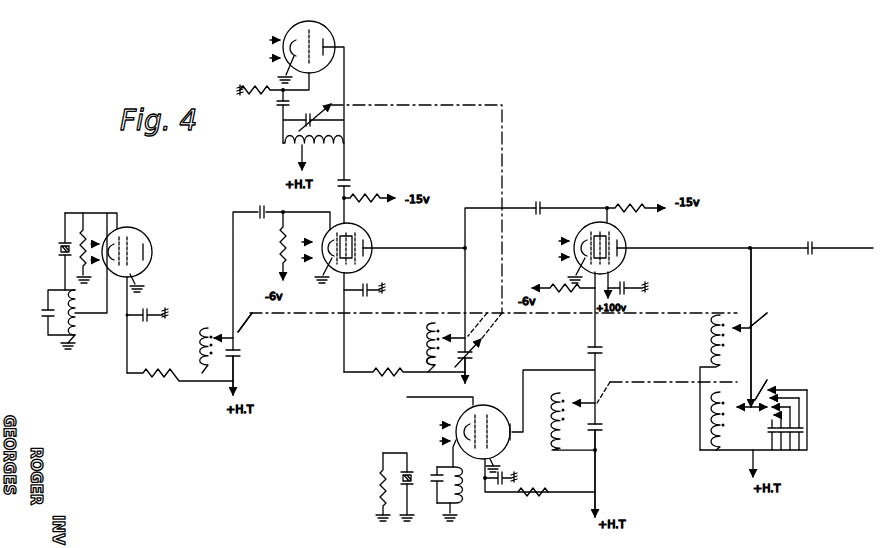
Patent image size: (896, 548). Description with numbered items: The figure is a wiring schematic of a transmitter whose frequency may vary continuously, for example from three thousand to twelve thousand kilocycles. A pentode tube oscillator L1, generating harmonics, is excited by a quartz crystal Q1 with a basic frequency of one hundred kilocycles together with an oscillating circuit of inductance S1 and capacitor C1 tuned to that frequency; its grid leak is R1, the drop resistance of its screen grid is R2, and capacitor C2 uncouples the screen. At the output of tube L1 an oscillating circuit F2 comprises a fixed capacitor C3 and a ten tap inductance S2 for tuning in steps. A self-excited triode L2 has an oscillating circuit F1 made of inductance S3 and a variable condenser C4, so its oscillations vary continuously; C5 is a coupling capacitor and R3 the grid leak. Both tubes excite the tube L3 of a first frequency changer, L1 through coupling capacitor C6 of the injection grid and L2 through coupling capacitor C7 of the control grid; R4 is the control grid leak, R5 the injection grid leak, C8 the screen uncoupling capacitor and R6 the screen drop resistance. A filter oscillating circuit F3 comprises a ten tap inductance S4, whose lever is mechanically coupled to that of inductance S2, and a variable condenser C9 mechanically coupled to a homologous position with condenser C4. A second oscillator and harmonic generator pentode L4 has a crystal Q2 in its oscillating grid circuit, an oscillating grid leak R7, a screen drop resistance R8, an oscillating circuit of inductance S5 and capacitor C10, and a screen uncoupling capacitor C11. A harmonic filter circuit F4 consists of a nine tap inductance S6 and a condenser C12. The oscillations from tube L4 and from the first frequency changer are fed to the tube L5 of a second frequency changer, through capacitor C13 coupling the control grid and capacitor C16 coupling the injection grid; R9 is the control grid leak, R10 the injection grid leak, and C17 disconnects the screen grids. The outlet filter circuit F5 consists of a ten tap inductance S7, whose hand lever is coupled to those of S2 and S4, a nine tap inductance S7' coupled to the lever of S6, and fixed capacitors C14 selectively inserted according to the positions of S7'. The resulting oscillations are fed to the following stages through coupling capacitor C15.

The quartz crystal Q1 is at (46, 251).
The grid leak R1 is at (92, 244).
The pentode tube oscillator L1 is at (118, 246).
The capacitor C1 is at (49, 312).
The inductance S1 is at (83, 316).
The screen uncoupling capacitor C2 is at (147, 323).
The oscillating circuit F2 is at (228, 319).
The ten tap inductance S2 is at (205, 350).
The drop resistance of the screen grid R2 is at (180, 366).
The fixed capacitor C3 is at (244, 354).
The coupling capacitor C6 is at (258, 221).
The injection grid leak R5 is at (272, 246).
The self-excited triode L2 is at (297, 38).
The grid leak R3 is at (261, 83).
The coupling capacitor C5 is at (273, 106).
The variable condenser C4 is at (319, 125).
The oscillating circuit F1 is at (315, 113).
The inductance S3 is at (313, 151).
The coupling capacitor C7 is at (351, 175).
The control grid leak R4 is at (369, 193).
The tube of first frequency changer L3 is at (340, 247).
The screen uncoupling capacitor C8 is at (364, 298).
The drop resistance of the screen R6 is at (404, 380).
The filter oscillating circuit F3 is at (433, 346).
The ten tap inductance S4 is at (440, 364).
The variable condenser C9 is at (474, 353).
The coupling capacitor C16 is at (545, 200).
The tube of second frequency changer L5 is at (595, 246).
The injection grid leak R10 is at (636, 200).
The control grid leak R9 is at (563, 296).
The screen grid disconnecting capacitor C17 is at (628, 281).
The coupling capacitor C13 is at (607, 344).
The coupling capacitor C15 is at (808, 238).
The oscillator and harmonic generator pentode tube L4 is at (469, 429).
The crystal Q2 is at (415, 469).
The oscillating grid leak R7 is at (372, 484).
The capacitor C10 is at (428, 485).
The inductance S5 is at (457, 485).
The uncoupling capacitor C11 is at (507, 472).
The drop resistance of the screen grid R8 is at (534, 485).
The nine tap inductance S6 is at (573, 421).
The harmonic filter circuit F4 is at (579, 391).
The condenser C12 is at (608, 419).
The ten tap inductance S7 is at (719, 382).
The outlet filter circuit F5 is at (766, 356).
The nine tap inductance S7' is at (739, 421).
The fixed capacitors C14 is at (807, 420).